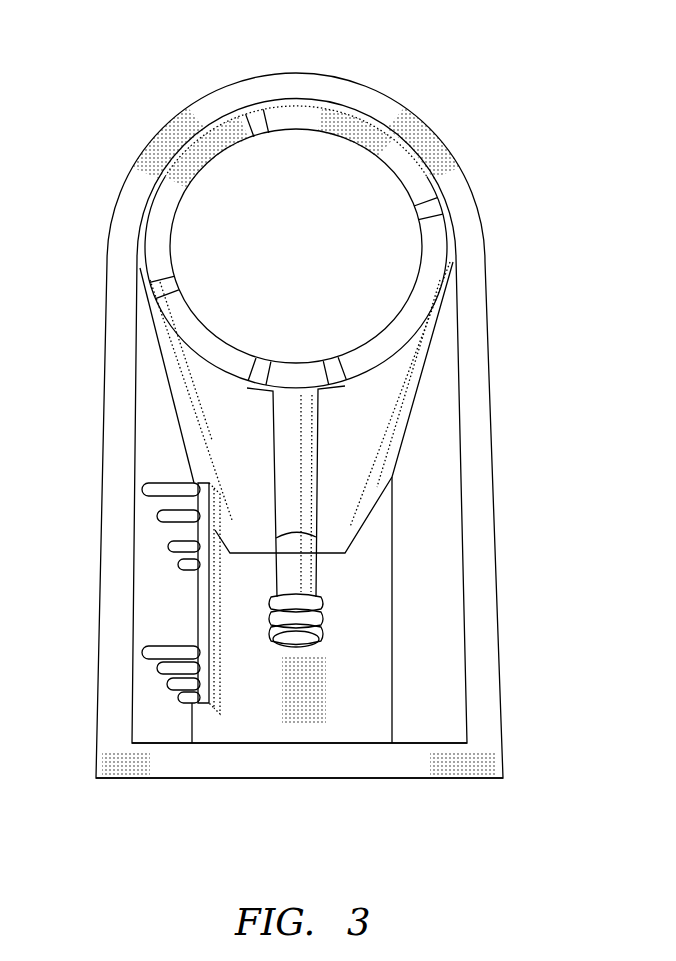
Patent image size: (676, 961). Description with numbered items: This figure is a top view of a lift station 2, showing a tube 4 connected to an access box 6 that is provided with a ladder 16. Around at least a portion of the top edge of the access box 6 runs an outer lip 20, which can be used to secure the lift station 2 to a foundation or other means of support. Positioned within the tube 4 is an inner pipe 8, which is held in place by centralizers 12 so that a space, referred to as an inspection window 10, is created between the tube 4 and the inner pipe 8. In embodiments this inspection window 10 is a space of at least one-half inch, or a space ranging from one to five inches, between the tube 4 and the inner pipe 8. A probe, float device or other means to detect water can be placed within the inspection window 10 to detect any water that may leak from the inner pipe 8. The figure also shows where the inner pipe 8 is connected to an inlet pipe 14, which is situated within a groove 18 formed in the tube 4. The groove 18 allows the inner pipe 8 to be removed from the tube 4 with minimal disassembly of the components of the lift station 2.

The lift station 2 is at (267, 780).
The tube 4 is at (215, 437).
The access box 6 is at (503, 684).
The inner pipe 8 is at (428, 258).
The inspection window 10 is at (383, 146).
The centralizers 12 is at (335, 356).
The inlet pipe 14 is at (318, 586).
The ladder 16 is at (143, 655).
The groove 18 is at (314, 487).
The outer lip 20 is at (480, 428).